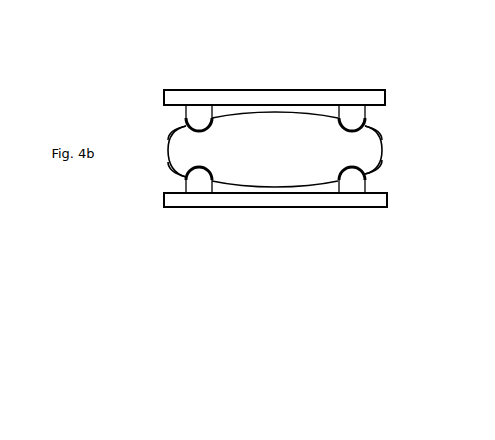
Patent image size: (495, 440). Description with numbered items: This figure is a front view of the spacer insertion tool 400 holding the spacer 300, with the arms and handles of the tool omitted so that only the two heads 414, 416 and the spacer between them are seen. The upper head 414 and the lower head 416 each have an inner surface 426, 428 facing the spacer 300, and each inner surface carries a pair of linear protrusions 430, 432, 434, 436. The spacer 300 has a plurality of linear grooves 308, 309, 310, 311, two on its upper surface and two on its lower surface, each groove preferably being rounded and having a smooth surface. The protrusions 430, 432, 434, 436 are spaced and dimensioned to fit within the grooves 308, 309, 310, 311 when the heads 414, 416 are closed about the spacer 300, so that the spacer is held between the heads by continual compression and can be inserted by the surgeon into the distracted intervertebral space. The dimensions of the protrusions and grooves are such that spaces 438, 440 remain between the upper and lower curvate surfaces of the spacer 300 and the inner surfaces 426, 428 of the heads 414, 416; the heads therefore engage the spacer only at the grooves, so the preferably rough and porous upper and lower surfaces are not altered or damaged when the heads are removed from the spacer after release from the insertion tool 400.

The spacer 300 is at (384, 147).
The linear groove 308 is at (367, 128).
The linear groove 309 is at (368, 166).
The linear groove 310 is at (183, 125).
The linear groove 311 is at (183, 174).
The spacer insertion tool 400 is at (318, 73).
The head 414 is at (263, 88).
The head 416 is at (249, 210).
The inner surface 426 is at (384, 98).
The inner surface 428 is at (377, 198).
The linear protrusion 430 is at (352, 110).
The linear protrusion 432 is at (351, 183).
The linear protrusion 434 is at (199, 110).
The linear protrusion 436 is at (196, 187).
The space 438 is at (283, 104).
The space 440 is at (275, 194).